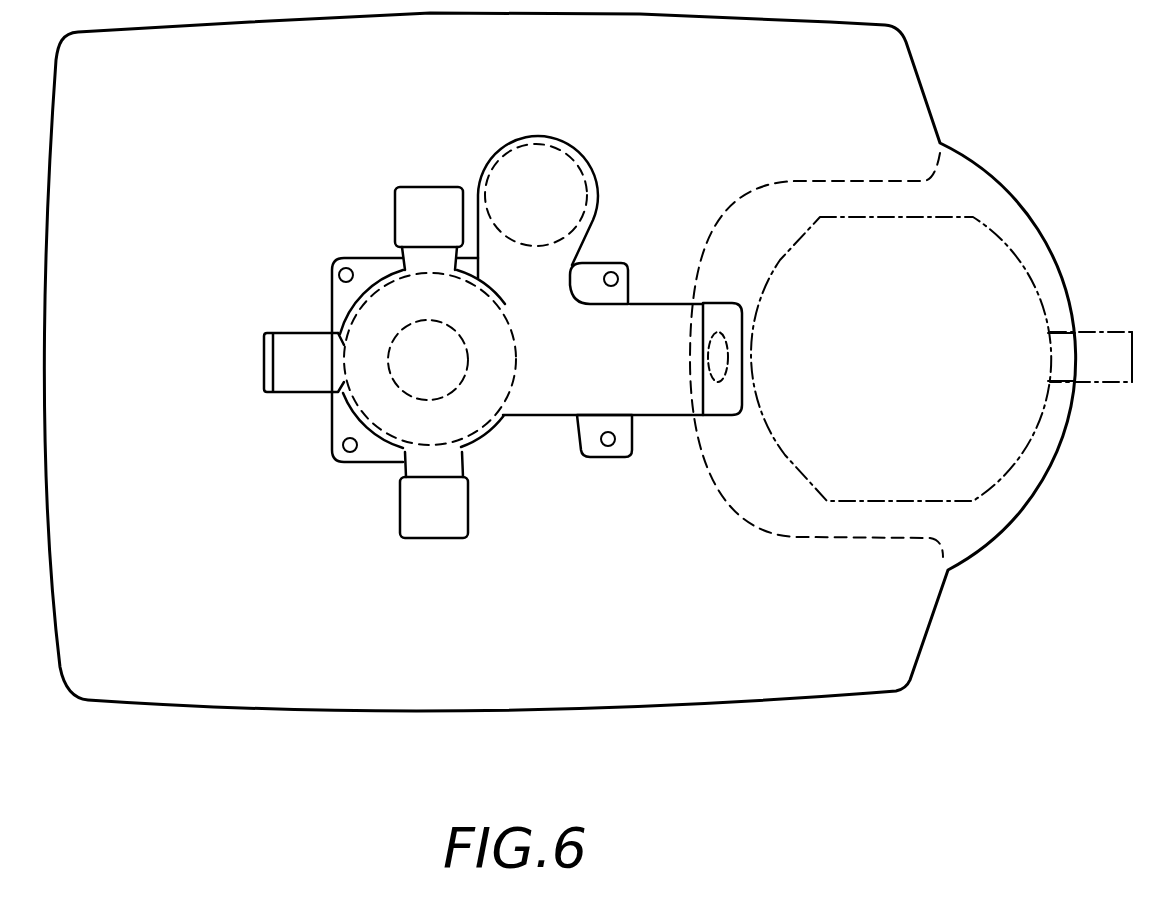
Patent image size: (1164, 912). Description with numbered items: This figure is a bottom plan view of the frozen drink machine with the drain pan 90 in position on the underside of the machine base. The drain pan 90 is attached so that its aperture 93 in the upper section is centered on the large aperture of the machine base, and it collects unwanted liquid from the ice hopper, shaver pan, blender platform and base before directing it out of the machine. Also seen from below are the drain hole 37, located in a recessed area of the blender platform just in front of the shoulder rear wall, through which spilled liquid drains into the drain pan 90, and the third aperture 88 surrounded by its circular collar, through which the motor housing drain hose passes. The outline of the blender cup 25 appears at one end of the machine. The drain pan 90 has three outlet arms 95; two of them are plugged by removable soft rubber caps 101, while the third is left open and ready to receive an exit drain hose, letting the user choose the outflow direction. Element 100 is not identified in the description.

The blender cup 25 is at (1010, 256).
The drain hole 37 is at (718, 362).
The third aperture 88 is at (537, 187).
The drain pan 90 is at (548, 377).
The aperture 93 is at (430, 357).
The outlet arms 95 is at (302, 373).
The pump flange 100 is at (483, 352).
The soft rubber caps 101 is at (405, 212).